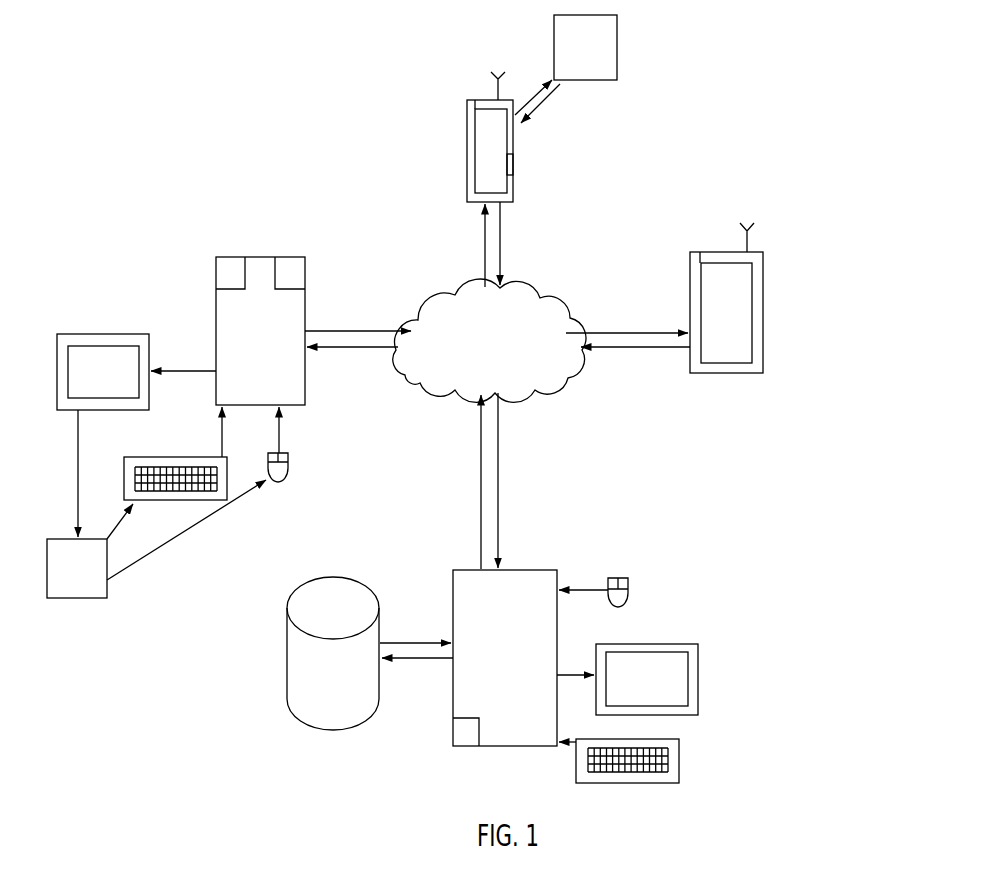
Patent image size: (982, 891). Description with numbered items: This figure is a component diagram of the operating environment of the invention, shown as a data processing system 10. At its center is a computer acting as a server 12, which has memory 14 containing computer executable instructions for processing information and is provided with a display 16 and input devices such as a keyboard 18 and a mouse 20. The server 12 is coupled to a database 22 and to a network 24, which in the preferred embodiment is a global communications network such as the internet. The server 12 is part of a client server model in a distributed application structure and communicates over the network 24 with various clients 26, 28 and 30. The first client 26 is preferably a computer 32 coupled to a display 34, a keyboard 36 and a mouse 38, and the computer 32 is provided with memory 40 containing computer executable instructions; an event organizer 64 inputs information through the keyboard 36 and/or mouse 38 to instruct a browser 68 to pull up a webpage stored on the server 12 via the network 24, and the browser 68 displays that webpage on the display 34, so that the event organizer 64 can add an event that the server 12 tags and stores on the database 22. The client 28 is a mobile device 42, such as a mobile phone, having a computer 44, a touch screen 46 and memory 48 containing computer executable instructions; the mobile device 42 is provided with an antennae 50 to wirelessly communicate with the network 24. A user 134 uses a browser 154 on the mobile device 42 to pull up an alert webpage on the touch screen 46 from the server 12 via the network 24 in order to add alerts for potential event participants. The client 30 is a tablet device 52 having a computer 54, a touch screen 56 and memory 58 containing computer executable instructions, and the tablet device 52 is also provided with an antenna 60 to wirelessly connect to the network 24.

The data processing system 10 is at (731, 111).
The server 12 is at (529, 570).
The memory 14 is at (468, 746).
The display 16 is at (698, 674).
The keyboard 18 is at (679, 760).
The mouse 20 is at (628, 593).
The database 22 is at (286, 679).
The network 24 is at (480, 357).
The first client 26 is at (252, 312).
The client 28 is at (536, 133).
The client 30 is at (750, 315).
The computer 32 is at (305, 313).
The display 34 is at (105, 334).
The keyboard 36 is at (153, 457).
The mouse 38 is at (290, 469).
The memory 40 is at (231, 257).
The mobile device 42 is at (491, 139).
The computer 44 is at (467, 190).
The touch screen 46 is at (495, 182).
The memory 48 is at (467, 107).
The antennae 50 is at (495, 80).
The tablet device 52 is at (779, 386).
The computer 54 is at (764, 357).
The touch screen 56 is at (730, 350).
The memory 58 is at (695, 258).
The antenna 60 is at (750, 238).
The event organizer 64 is at (73, 598).
The browser 68 is at (289, 256).
The user 134 is at (618, 32).
The browser 154 is at (513, 165).